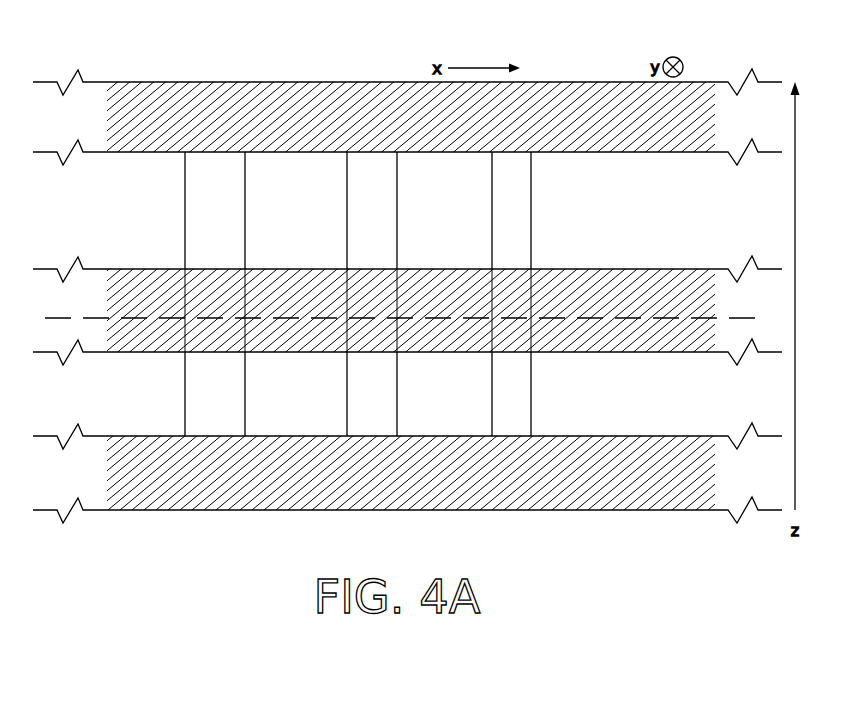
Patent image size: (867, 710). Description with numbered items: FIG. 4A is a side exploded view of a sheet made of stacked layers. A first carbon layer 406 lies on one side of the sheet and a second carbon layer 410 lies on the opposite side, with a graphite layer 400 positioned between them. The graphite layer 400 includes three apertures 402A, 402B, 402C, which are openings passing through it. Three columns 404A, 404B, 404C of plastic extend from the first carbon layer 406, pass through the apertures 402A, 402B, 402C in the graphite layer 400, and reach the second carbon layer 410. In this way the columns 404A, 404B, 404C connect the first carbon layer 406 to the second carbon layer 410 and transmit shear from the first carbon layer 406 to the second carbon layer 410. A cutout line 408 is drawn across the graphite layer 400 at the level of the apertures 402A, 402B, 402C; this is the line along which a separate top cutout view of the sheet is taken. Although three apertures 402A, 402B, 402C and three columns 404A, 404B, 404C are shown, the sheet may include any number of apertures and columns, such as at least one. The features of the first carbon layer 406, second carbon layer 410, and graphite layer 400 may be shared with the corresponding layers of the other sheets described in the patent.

The graphite layer 400 is at (695, 269).
The aperture 402A is at (185, 318).
The aperture 402B is at (347, 318).
The aperture 402C is at (492, 312).
The column 404A is at (185, 215).
The column 404B is at (347, 218).
The column 404C is at (567, 397).
The first carbon layer 406 is at (323, 82).
The cutout line 408 is at (401, 319).
The second carbon layer 410 is at (265, 510).